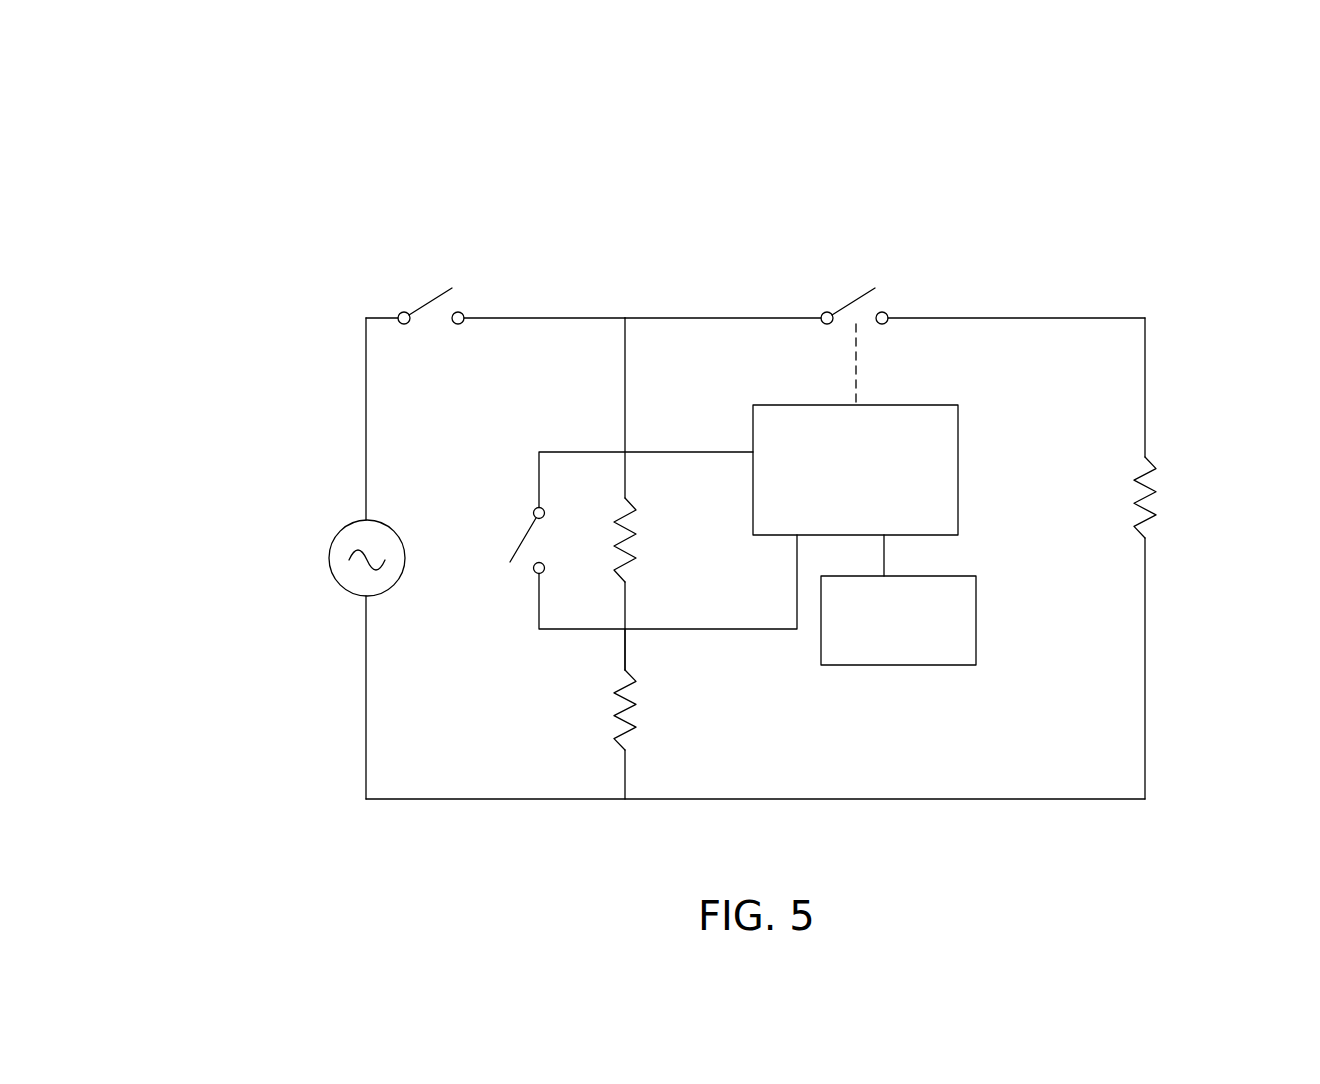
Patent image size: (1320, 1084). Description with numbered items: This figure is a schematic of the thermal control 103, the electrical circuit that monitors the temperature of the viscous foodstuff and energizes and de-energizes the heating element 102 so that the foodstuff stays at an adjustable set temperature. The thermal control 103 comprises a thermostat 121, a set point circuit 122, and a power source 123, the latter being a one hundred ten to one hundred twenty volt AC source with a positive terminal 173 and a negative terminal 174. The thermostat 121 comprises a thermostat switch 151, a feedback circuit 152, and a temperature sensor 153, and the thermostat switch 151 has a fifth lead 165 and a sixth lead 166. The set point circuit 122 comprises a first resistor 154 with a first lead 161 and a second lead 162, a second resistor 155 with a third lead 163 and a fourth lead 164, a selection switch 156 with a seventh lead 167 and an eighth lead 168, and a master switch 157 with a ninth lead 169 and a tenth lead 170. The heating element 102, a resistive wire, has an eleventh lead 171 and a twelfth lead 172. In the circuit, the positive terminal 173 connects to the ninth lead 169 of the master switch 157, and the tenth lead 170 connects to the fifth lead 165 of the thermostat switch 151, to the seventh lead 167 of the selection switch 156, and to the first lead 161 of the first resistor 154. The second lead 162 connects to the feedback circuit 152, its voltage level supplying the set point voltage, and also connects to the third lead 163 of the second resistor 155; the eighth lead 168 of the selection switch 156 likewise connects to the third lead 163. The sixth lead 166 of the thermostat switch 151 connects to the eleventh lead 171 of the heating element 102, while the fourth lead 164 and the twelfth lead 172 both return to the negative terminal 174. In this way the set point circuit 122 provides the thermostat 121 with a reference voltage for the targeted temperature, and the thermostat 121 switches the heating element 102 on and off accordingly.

The thermal control 103 is at (226, 163).
The thermostat 121 is at (857, 222).
The set point circuit 122 is at (546, 674).
The power source 123 is at (293, 570).
The heating element 102 is at (1152, 497).
The thermostat switch 151 is at (858, 298).
The feedback circuit 152 is at (958, 472).
The temperature sensor 153 is at (976, 620).
The first resistor 154 is at (633, 545).
The second resistor 155 is at (633, 712).
The selection switch 156 is at (527, 537).
The master switch 157 is at (434, 300).
The first lead 161 is at (625, 477).
The second lead 162 is at (625, 602).
The third lead 163 is at (625, 643).
The fourth lead 164 is at (627, 772).
The fifth lead 165 is at (762, 316).
The sixth lead 166 is at (958, 316).
The seventh lead 167 is at (539, 472).
The eighth lead 168 is at (539, 605).
The ninth lead 169 is at (380, 316).
The tenth lead 170 is at (503, 316).
The eleventh lead 171 is at (1145, 413).
The twelfth lead 172 is at (1145, 578).
The positive terminal 173 is at (366, 478).
The negative terminal 174 is at (366, 627).